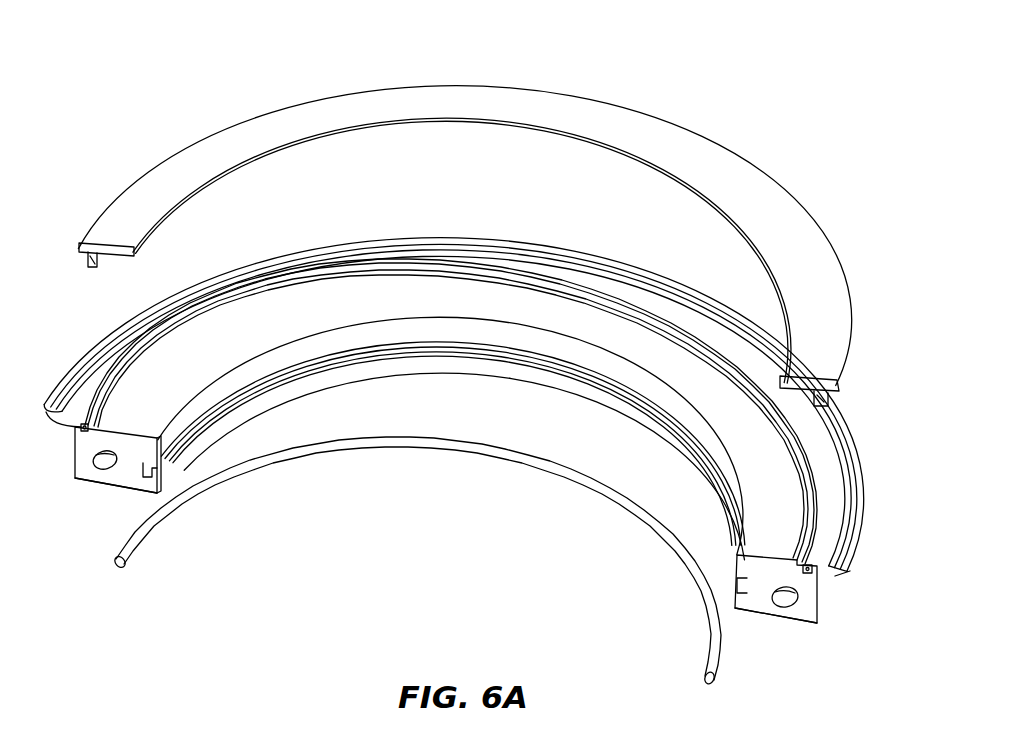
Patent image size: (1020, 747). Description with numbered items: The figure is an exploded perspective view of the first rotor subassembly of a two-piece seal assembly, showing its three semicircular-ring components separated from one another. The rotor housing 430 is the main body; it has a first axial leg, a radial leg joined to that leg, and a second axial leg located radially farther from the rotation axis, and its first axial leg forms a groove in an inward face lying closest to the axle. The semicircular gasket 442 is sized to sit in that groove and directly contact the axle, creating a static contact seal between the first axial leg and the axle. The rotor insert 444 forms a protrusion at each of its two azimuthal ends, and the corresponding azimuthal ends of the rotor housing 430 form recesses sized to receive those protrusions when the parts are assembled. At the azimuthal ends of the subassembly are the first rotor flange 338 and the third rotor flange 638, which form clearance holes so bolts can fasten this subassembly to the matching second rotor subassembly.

The rotor insert 444 is at (518, 86).
The rotor housing 430 is at (480, 233).
The semicircular gasket 442 is at (438, 450).
The first rotor flange 338 is at (88, 476).
The third rotor flange 638 is at (803, 630).